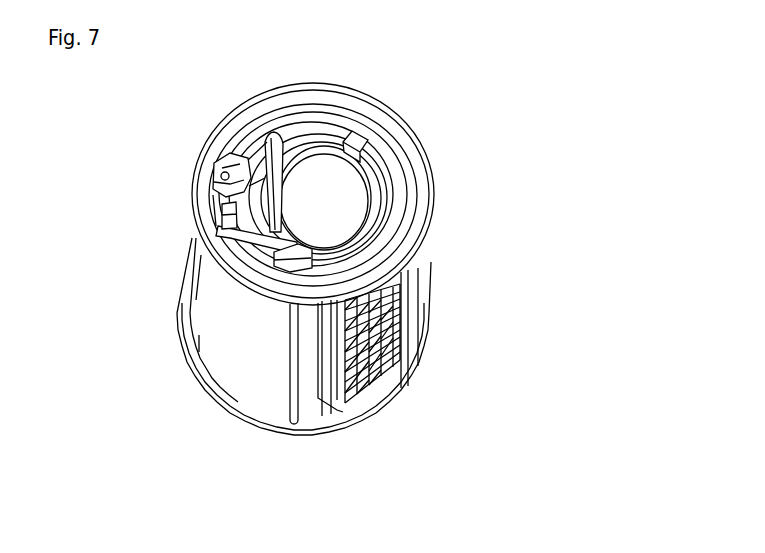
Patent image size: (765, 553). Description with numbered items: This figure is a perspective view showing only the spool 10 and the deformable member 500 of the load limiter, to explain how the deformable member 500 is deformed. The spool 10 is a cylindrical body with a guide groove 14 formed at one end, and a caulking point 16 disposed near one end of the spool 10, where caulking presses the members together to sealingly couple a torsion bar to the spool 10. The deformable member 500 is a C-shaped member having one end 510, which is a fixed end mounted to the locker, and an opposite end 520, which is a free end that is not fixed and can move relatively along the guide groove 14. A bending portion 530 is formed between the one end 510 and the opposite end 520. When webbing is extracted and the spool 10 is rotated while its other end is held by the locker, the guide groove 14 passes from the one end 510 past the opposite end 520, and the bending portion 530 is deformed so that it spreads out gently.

The spool 10 is at (228, 360).
The guide groove 14 is at (245, 130).
The caulking point 16 is at (382, 372).
The deformable member 500 is at (183, 226).
The one end of the deformable member 510 is at (225, 177).
The opposite end of the deformable member 520 is at (312, 248).
The bending portion 530 is at (222, 236).